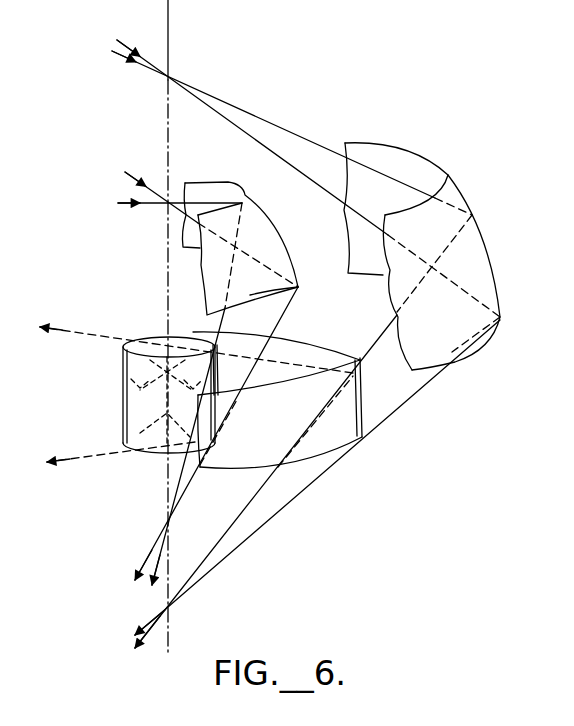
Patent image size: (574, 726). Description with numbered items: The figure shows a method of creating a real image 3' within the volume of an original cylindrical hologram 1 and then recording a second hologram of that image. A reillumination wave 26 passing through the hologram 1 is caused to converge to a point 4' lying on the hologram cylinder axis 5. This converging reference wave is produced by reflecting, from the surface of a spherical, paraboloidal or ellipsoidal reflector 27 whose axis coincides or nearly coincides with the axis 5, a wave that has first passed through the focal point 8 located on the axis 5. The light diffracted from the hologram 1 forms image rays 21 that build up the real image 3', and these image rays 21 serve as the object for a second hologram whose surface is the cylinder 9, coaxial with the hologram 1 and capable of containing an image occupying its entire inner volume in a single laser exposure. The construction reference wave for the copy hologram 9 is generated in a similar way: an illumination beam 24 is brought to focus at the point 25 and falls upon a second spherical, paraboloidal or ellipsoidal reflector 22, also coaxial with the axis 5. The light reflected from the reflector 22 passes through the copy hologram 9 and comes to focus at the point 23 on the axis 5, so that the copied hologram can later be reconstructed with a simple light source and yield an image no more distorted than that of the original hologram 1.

The hologram cylinder axis 5 is at (168, 9).
The focal point 8 is at (172, 77).
The focus point of illumination beam 25 is at (168, 201).
The illumination beam 24 is at (157, 206).
The reflector 22 is at (280, 232).
The reflector 27 is at (490, 257).
The reillumination wave 26 is at (410, 396).
The original hologram 1 is at (315, 340).
The image rays 21 is at (83, 332).
The real image 3' is at (143, 400).
The cylinder (copy hologram) 9 is at (123, 432).
The focus point 23 is at (168, 522).
The focus point of reillumination wave 4' is at (266, 481).